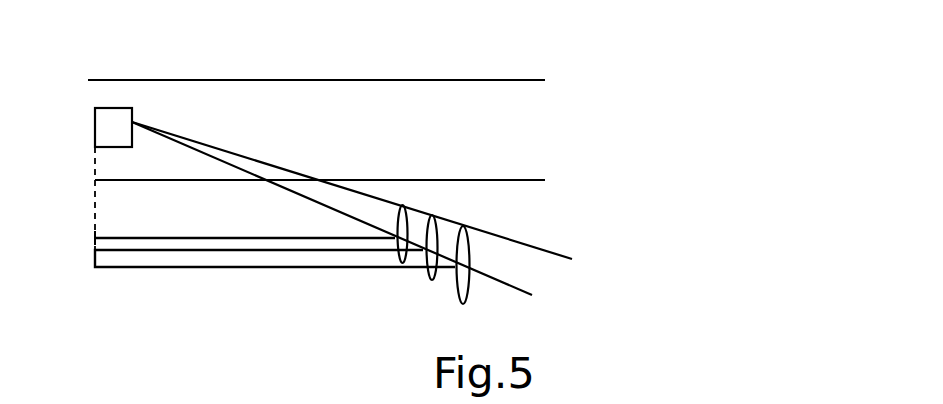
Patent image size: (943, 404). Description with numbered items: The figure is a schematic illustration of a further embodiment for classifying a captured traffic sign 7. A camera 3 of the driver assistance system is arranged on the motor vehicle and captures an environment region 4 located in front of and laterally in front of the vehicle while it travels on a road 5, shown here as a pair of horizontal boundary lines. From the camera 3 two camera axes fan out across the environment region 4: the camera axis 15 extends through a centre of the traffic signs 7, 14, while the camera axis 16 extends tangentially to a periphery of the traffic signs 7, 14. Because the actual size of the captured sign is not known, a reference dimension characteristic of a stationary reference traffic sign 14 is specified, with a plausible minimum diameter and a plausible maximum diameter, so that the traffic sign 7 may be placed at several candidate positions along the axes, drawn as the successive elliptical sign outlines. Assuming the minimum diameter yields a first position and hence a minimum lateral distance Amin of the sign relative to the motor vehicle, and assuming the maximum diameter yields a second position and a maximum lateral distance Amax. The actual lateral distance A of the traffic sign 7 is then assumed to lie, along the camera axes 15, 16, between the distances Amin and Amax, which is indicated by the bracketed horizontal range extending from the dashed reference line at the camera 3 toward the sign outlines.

The camera 3 is at (113, 118).
The road 5 is at (332, 108).
The camera axis 16 is at (280, 172).
The camera axis 15 is at (340, 208).
The stationary reference traffic sign 14 is at (403, 204).
The traffic sign 7 is at (433, 214).
The environment region 4 is at (596, 137).
The minimum lateral distance Amin is at (142, 236).
The maximum lateral distance Amax is at (150, 270).
The lateral distance A is at (220, 252).